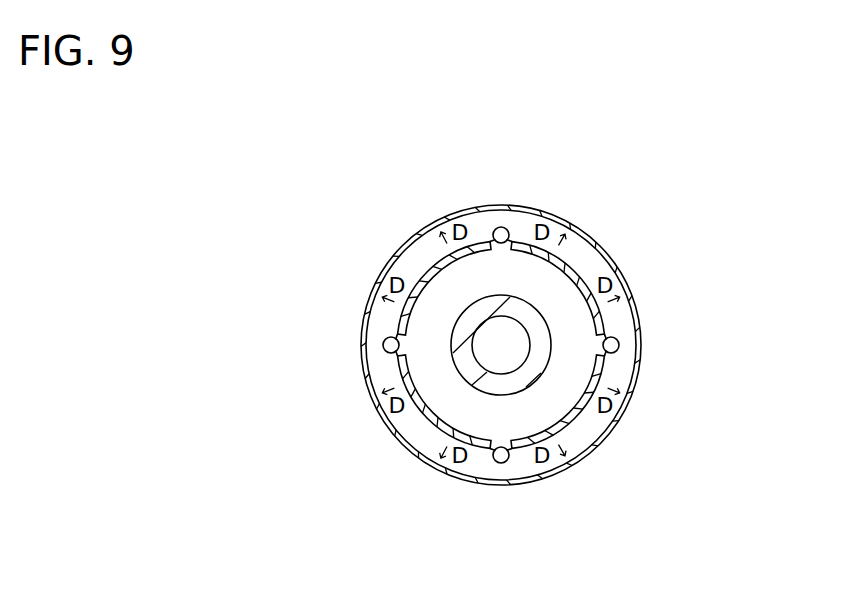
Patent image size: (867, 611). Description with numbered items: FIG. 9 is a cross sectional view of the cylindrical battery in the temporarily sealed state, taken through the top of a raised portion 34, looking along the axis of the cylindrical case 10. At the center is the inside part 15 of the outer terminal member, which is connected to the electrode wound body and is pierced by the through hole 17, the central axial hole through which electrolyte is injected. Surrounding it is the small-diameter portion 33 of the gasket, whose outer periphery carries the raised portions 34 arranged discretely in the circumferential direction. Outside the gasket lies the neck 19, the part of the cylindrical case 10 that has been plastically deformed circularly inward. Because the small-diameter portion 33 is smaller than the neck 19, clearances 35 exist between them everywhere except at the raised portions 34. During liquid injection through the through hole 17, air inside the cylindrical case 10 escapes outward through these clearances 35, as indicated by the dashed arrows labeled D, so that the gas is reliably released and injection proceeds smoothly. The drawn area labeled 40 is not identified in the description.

The cylindrical case 10 is at (398, 438).
The inside part 15 is at (530, 328).
The through hole 17 is at (512, 354).
The neck 19 is at (372, 364).
The small-diameter portion 33 is at (514, 462).
The raised portions 34 is at (388, 340).
The clearances 35 is at (428, 268).
The cam ring 40 is at (546, 283).